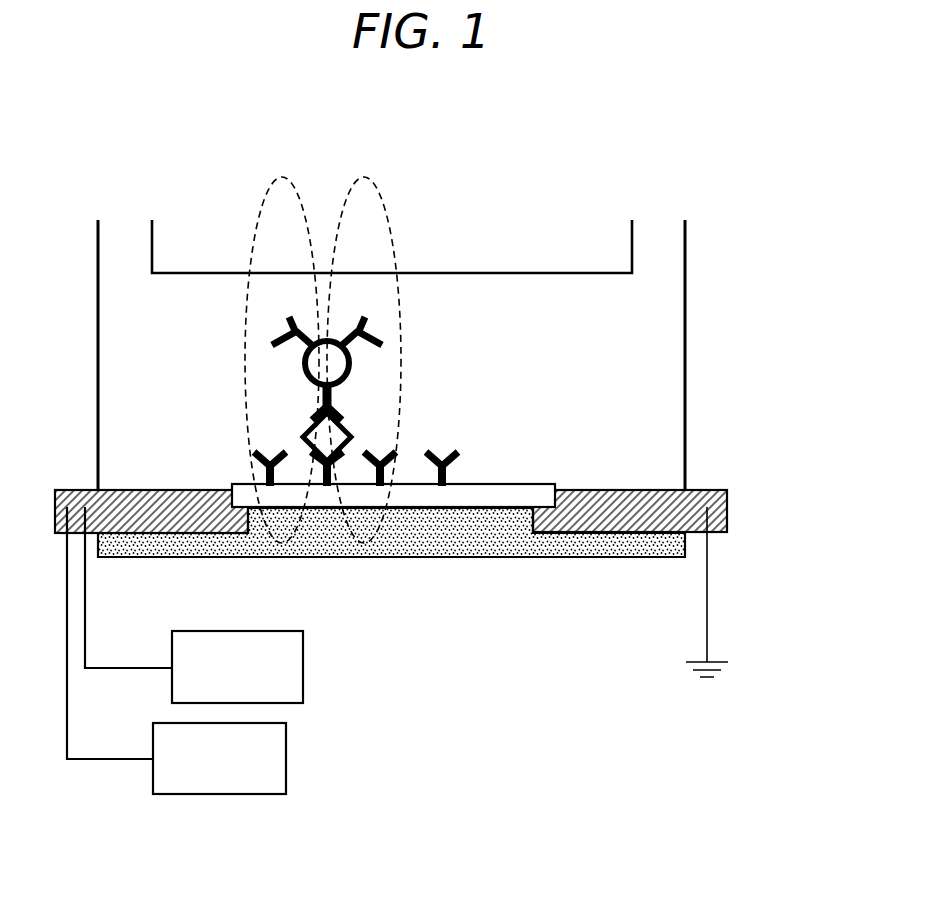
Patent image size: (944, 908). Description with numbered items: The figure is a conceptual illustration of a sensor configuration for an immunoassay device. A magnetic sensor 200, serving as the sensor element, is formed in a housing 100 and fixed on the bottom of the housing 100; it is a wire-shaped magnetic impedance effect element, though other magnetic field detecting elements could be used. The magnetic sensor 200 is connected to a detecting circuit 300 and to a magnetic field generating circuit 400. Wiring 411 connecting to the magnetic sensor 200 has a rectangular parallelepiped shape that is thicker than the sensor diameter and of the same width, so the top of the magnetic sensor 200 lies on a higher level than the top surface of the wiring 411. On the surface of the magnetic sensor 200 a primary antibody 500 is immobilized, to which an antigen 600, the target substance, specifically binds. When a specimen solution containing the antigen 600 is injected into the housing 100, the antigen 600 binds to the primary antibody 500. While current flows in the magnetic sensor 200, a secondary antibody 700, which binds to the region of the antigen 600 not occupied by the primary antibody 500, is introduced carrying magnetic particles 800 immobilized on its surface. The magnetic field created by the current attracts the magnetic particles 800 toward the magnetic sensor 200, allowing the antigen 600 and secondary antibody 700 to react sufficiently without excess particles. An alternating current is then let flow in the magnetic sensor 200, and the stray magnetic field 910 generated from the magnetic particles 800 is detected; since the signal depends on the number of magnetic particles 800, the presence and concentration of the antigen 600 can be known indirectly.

The housing 100 is at (685, 453).
The magnetic sensor 200 is at (514, 490).
The detecting circuit 300 is at (303, 667).
The magnetic field generating circuit 400 is at (286, 757).
The wiring 411 is at (727, 512).
The primary antibody 500 is at (448, 456).
The antigen 600 is at (332, 437).
The secondary antibody 700 is at (382, 340).
The magnetic particles 800 is at (326, 341).
The stray magnetic field 910 is at (376, 184).